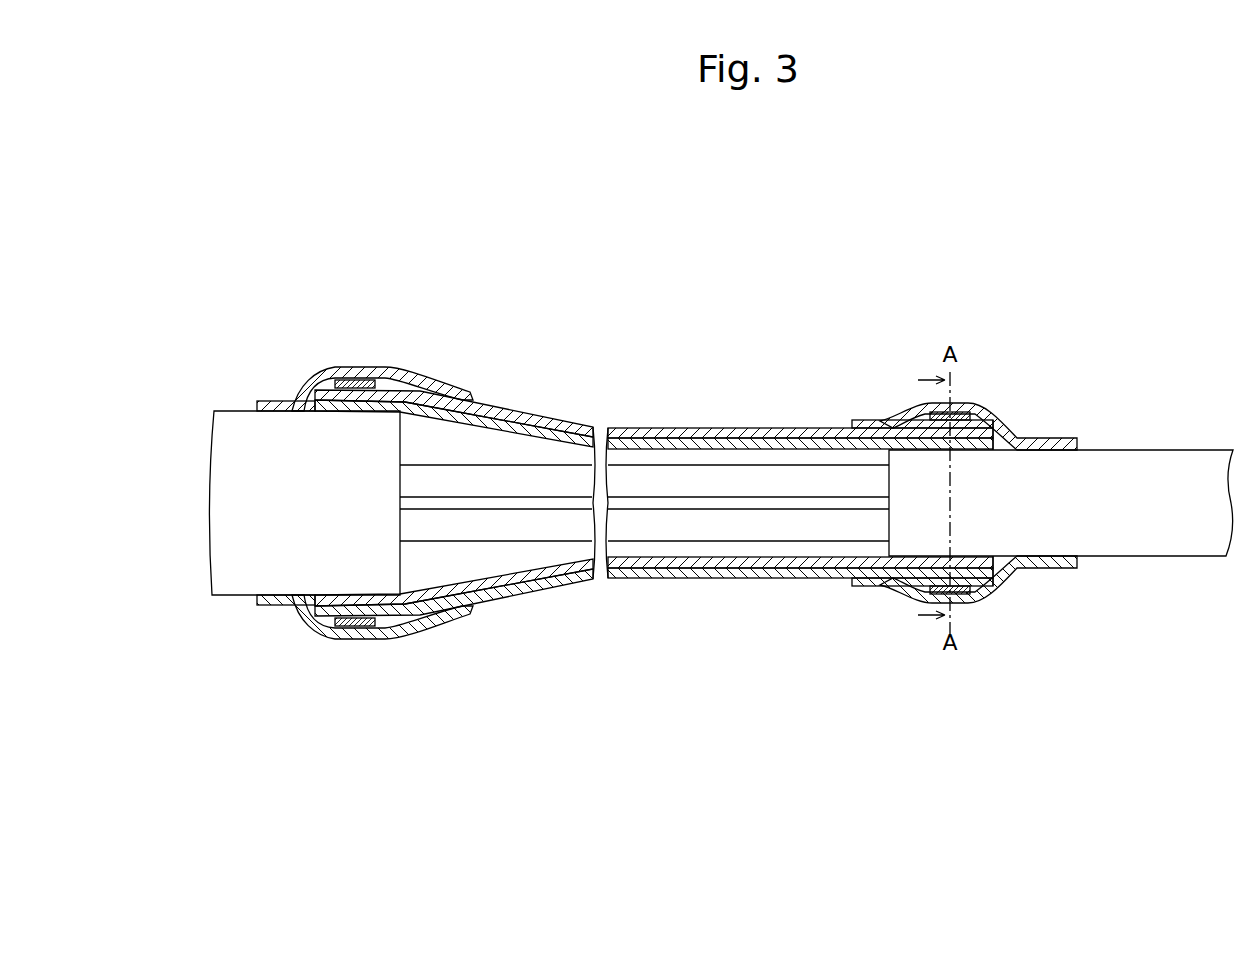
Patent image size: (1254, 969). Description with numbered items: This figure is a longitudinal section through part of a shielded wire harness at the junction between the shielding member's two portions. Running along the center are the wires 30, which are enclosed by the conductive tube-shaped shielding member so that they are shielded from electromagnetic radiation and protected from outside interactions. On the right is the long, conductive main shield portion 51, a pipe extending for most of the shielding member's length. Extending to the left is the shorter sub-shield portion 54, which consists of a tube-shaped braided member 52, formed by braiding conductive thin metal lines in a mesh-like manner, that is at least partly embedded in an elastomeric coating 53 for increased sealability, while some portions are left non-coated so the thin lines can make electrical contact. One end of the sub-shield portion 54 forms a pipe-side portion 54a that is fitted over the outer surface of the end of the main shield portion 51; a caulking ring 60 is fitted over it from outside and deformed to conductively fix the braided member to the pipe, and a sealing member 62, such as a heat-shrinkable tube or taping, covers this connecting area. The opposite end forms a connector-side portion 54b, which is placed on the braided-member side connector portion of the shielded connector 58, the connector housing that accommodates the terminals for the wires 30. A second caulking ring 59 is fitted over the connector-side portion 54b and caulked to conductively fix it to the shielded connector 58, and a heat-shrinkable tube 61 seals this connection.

The wires 30 is at (690, 483).
The main shield portion 51 is at (1118, 548).
The braided member 52 is at (677, 443).
The coating 53 is at (636, 428).
The sub-shield portion 54 is at (625, 438).
The pipe-side portion 54a is at (848, 411).
The connector-side portion 54b is at (389, 385).
The shielded connector 58 is at (233, 573).
The caulking ring 59 is at (357, 622).
The caulking ring 60 is at (928, 416).
The heat-shrinkable tube 61 is at (298, 396).
The sealing member 62 is at (997, 413).